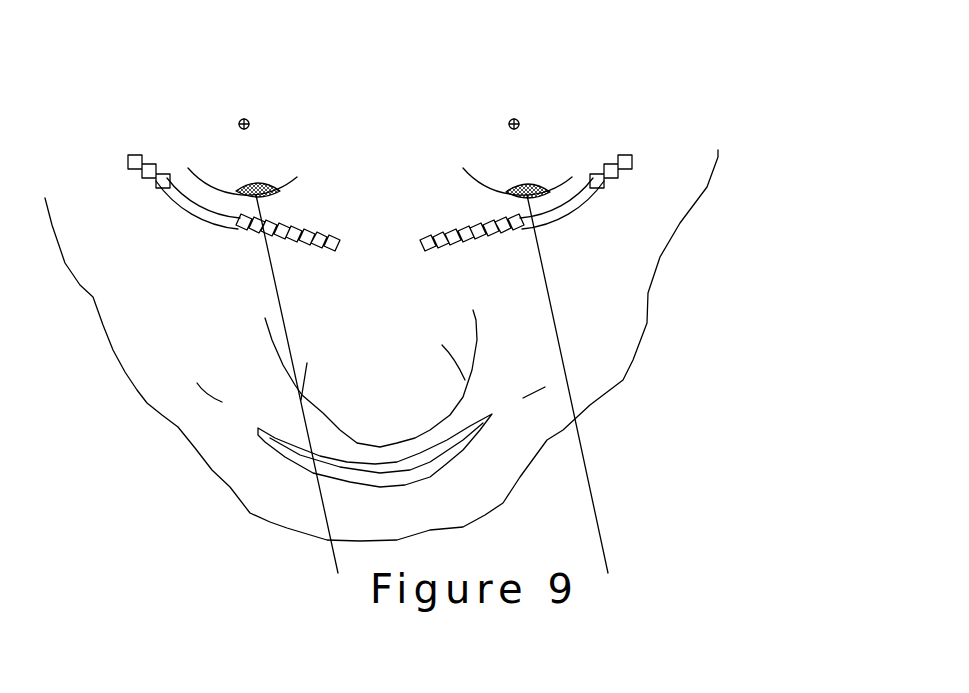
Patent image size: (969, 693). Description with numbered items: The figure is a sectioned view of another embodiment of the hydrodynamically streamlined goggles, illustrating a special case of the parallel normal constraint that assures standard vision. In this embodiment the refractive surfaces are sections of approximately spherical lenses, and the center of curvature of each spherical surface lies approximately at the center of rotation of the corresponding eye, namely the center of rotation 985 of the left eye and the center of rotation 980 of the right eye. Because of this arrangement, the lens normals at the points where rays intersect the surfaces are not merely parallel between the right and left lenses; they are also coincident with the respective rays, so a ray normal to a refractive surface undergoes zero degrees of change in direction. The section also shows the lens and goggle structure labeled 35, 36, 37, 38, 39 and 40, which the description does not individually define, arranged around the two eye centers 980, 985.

The right implant upper end 35 is at (615, 133).
The left implant upper end 36 is at (122, 140).
The right implant body 37 is at (483, 253).
The left implant body 38 is at (207, 233).
The right implant lower serrated end 39 is at (463, 228).
The left implant lower serrated end 40 is at (298, 225).
The center of rotation of the right eye 980 is at (243, 110).
The center of rotation of the left eye 985 is at (515, 110).